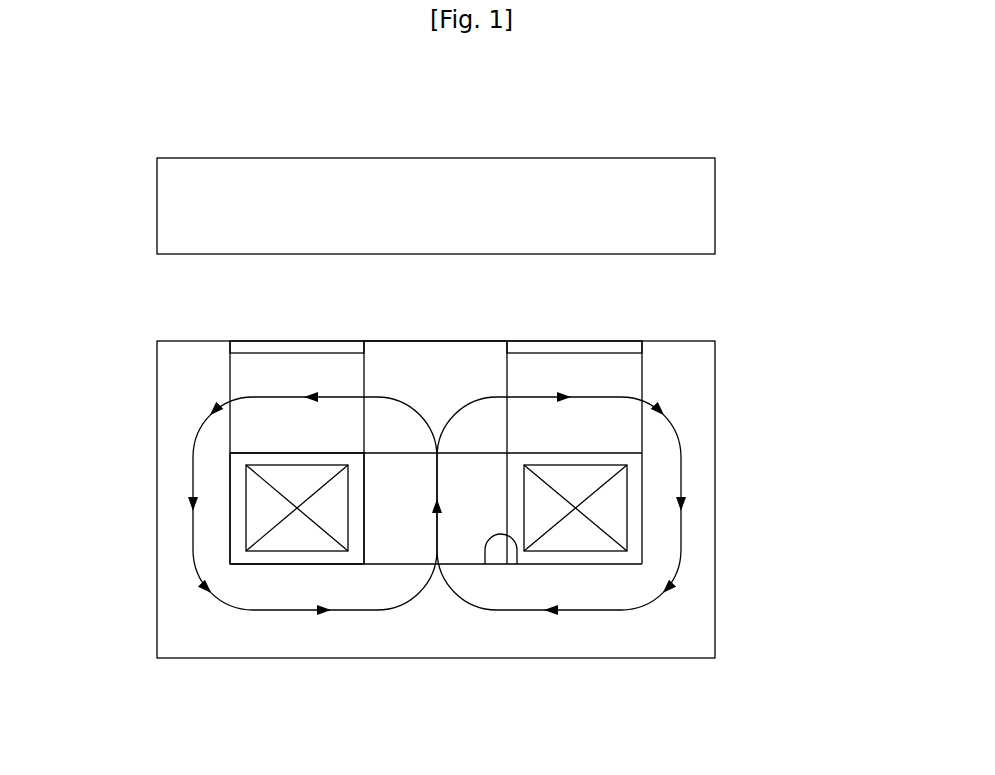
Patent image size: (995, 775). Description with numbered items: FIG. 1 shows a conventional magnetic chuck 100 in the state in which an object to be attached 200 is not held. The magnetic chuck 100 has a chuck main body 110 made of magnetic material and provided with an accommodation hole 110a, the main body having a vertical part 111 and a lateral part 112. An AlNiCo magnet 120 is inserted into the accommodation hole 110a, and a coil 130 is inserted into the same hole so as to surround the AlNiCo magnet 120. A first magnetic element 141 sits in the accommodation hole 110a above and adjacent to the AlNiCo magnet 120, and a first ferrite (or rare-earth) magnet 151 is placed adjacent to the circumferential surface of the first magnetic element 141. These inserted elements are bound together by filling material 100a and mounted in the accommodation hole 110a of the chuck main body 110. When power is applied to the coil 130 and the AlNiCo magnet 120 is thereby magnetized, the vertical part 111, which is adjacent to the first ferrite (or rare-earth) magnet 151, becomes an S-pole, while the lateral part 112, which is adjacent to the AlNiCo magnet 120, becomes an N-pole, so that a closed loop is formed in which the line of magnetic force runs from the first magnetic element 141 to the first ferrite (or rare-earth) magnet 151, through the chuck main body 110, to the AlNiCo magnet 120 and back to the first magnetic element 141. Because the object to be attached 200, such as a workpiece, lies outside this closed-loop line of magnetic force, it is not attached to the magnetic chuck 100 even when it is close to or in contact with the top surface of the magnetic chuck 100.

The magnetic chuck 100 is at (742, 609).
The filling material 100a is at (232, 551).
The chuck main body 110 is at (292, 660).
The accommodation hole 110a is at (512, 552).
The vertical part 111 is at (171, 380).
The lateral part 112 is at (444, 648).
The AlNiCo magnet 120 is at (385, 566).
The coil 130 is at (575, 553).
The first magnetic element 141 is at (406, 340).
The first ferrite (or rare-earth) magnet 151 is at (272, 352).
The object to be attached 200 is at (484, 157).